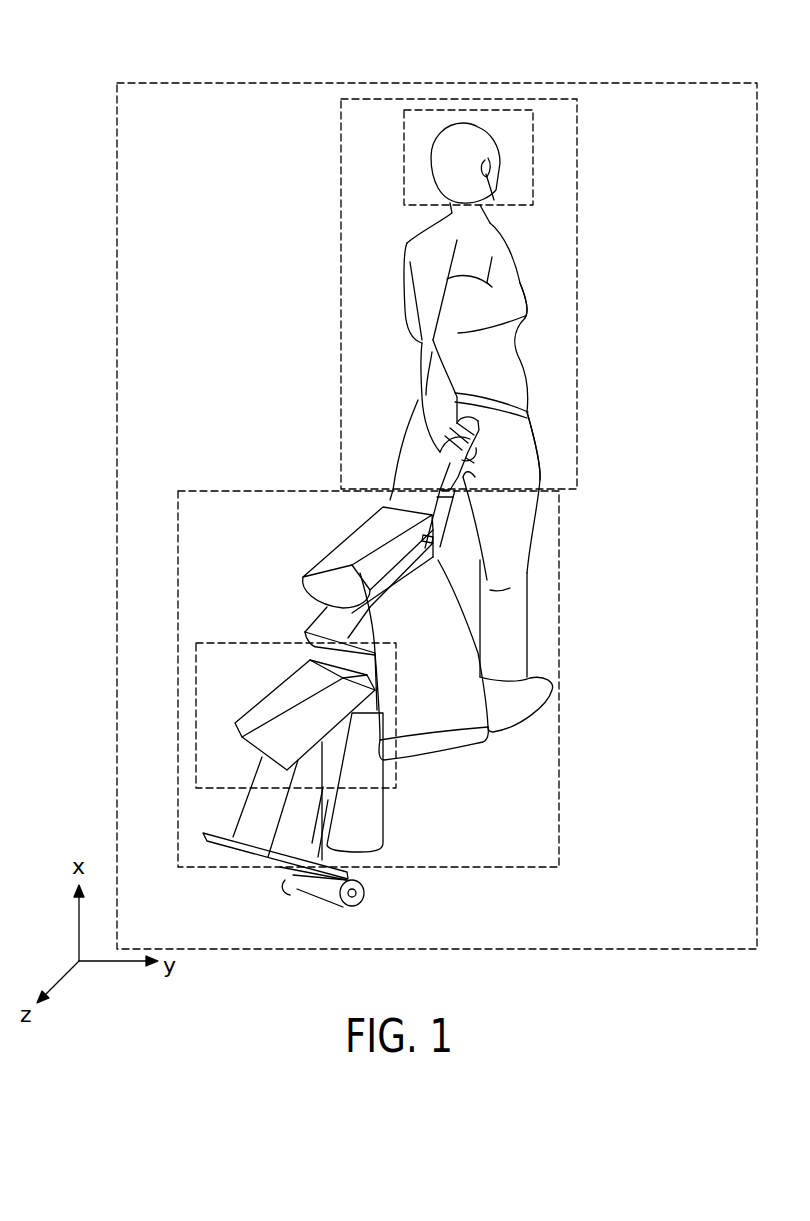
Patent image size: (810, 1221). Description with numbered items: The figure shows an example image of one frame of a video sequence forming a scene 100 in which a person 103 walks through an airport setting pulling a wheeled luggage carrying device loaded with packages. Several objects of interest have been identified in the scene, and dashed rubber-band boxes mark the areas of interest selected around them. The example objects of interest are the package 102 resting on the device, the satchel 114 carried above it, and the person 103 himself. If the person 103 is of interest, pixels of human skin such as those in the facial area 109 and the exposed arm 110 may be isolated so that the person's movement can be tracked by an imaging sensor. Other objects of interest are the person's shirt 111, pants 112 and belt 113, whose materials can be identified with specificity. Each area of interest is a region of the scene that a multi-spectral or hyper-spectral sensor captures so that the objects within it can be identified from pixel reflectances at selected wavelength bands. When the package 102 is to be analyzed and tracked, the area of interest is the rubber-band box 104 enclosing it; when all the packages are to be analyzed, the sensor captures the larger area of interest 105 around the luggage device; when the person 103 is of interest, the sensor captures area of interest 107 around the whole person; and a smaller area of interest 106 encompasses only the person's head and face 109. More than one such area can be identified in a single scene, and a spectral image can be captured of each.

The scene 100 is at (150, 83).
The package 102 is at (265, 712).
The person 103 is at (396, 225).
The rubber-band box 104 is at (228, 643).
The area of interest 105 is at (213, 490).
The area of interest 106 is at (404, 148).
The area of interest 107 is at (577, 190).
The facial area 109 is at (500, 163).
The exposed arm 110 is at (520, 317).
The shirt 111 is at (420, 265).
The pants 112 is at (398, 434).
The belt 113 is at (556, 410).
The satchel 114 is at (460, 722).